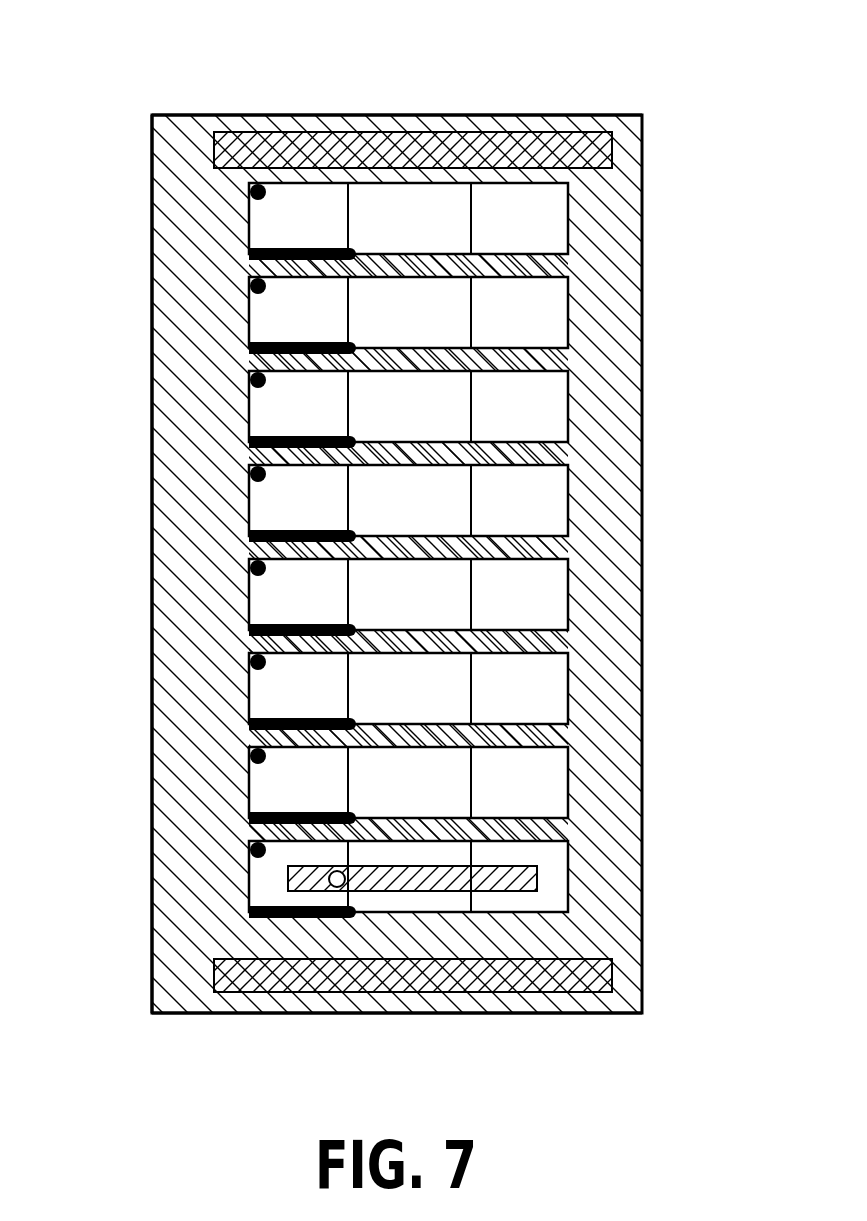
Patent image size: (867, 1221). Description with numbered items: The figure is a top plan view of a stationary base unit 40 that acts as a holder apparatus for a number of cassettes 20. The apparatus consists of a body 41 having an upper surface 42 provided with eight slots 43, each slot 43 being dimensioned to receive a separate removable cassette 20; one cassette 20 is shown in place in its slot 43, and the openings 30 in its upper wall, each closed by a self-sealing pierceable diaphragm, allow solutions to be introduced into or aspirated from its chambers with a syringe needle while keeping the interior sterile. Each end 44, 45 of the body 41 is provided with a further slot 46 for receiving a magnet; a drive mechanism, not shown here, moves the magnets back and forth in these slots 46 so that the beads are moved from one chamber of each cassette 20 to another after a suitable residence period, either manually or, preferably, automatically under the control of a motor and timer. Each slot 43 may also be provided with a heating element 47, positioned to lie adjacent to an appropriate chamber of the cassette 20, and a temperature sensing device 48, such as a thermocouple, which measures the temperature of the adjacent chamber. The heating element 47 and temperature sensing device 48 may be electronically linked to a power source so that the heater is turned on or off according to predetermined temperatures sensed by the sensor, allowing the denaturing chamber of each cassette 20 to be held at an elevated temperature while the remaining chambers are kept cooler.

The cassette 20 is at (500, 880).
The opening 30 is at (330, 880).
The stationary base unit 40 is at (622, 118).
The body 41 is at (148, 172).
The upper surface 42 is at (190, 127).
The slot 43 is at (562, 222).
The end of the body 44 is at (503, 113).
The end of the body 45 is at (215, 1013).
The further slot 46 is at (603, 152).
The heating element 47 is at (278, 437).
The temperature sensing device 48 is at (258, 475).